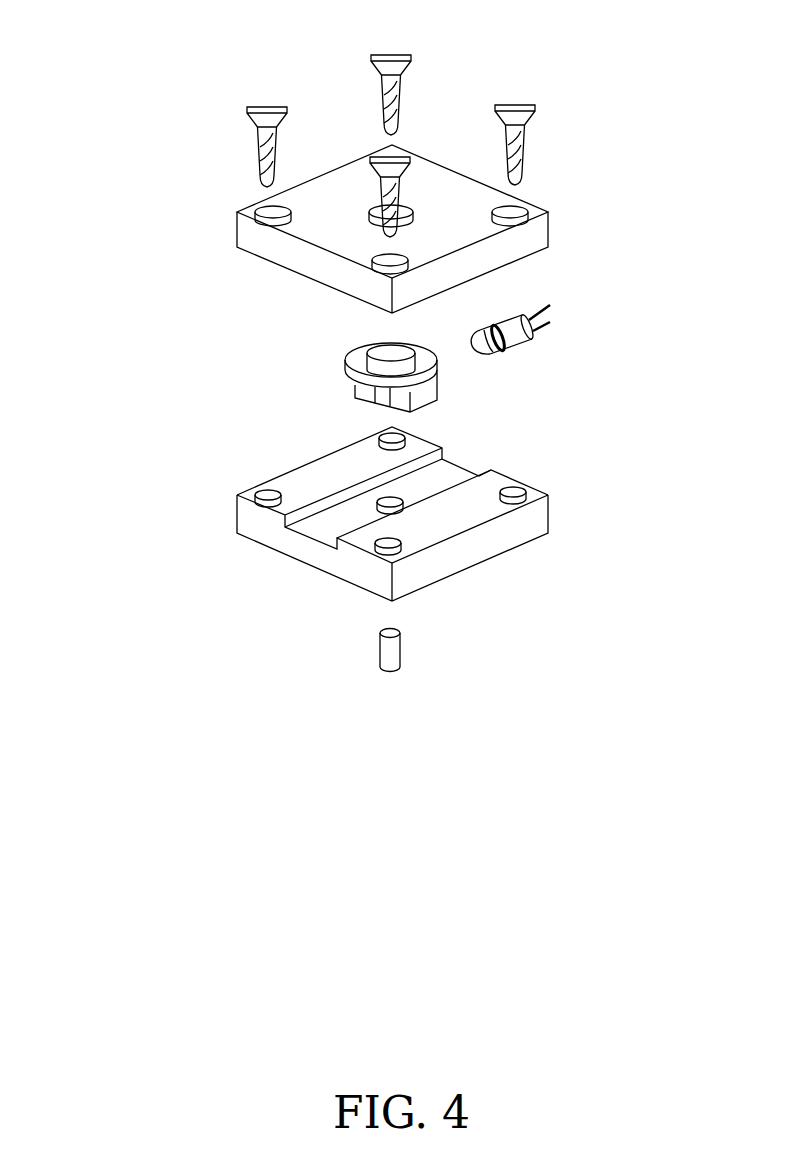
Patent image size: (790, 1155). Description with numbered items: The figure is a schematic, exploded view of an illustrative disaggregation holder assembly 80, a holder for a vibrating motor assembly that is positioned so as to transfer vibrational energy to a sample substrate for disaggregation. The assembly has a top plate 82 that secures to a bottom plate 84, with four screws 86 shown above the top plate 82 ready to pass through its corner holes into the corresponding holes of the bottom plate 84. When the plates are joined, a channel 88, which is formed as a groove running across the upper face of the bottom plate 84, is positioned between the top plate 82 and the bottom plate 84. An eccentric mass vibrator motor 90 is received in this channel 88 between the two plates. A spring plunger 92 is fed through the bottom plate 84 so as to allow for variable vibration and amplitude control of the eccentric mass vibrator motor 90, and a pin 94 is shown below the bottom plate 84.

The disaggregation holder assembly 80 is at (160, 70).
The top plate 82 is at (548, 197).
The bottom plate 84 is at (415, 559).
The screws 86 is at (385, 160).
The channel 88 is at (323, 530).
The eccentric mass vibrator motor 90 is at (553, 340).
The spring plunger 92 is at (338, 382).
The pin 94 is at (403, 675).